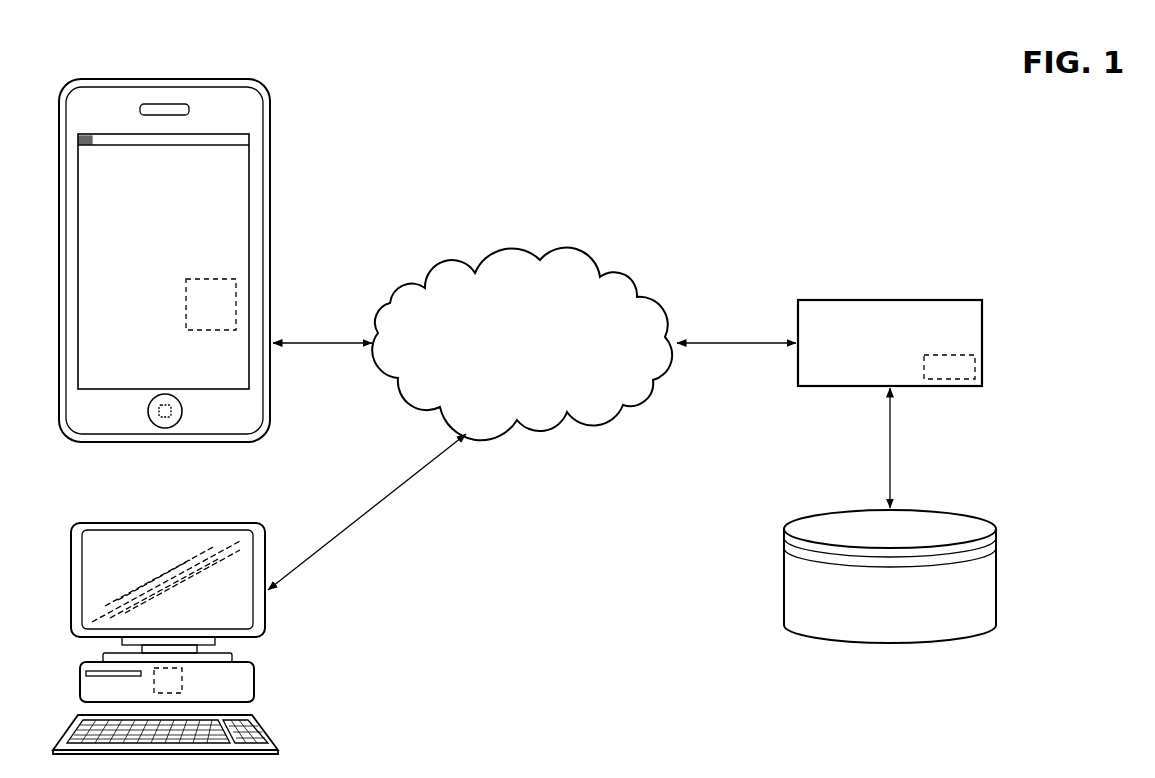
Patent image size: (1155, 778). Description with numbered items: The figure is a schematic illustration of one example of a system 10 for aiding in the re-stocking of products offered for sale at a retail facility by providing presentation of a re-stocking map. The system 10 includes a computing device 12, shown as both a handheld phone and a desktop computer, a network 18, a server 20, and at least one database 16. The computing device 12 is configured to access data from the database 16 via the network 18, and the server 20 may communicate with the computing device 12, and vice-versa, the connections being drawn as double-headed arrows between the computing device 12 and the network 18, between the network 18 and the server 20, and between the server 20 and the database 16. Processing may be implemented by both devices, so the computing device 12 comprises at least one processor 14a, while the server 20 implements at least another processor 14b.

The system 10 is at (729, 139).
The computing device 12 is at (258, 83).
The processor 14a is at (238, 297).
The processor 14b is at (950, 383).
The database 16 is at (963, 510).
The network 18 is at (517, 250).
The server 20 is at (974, 299).